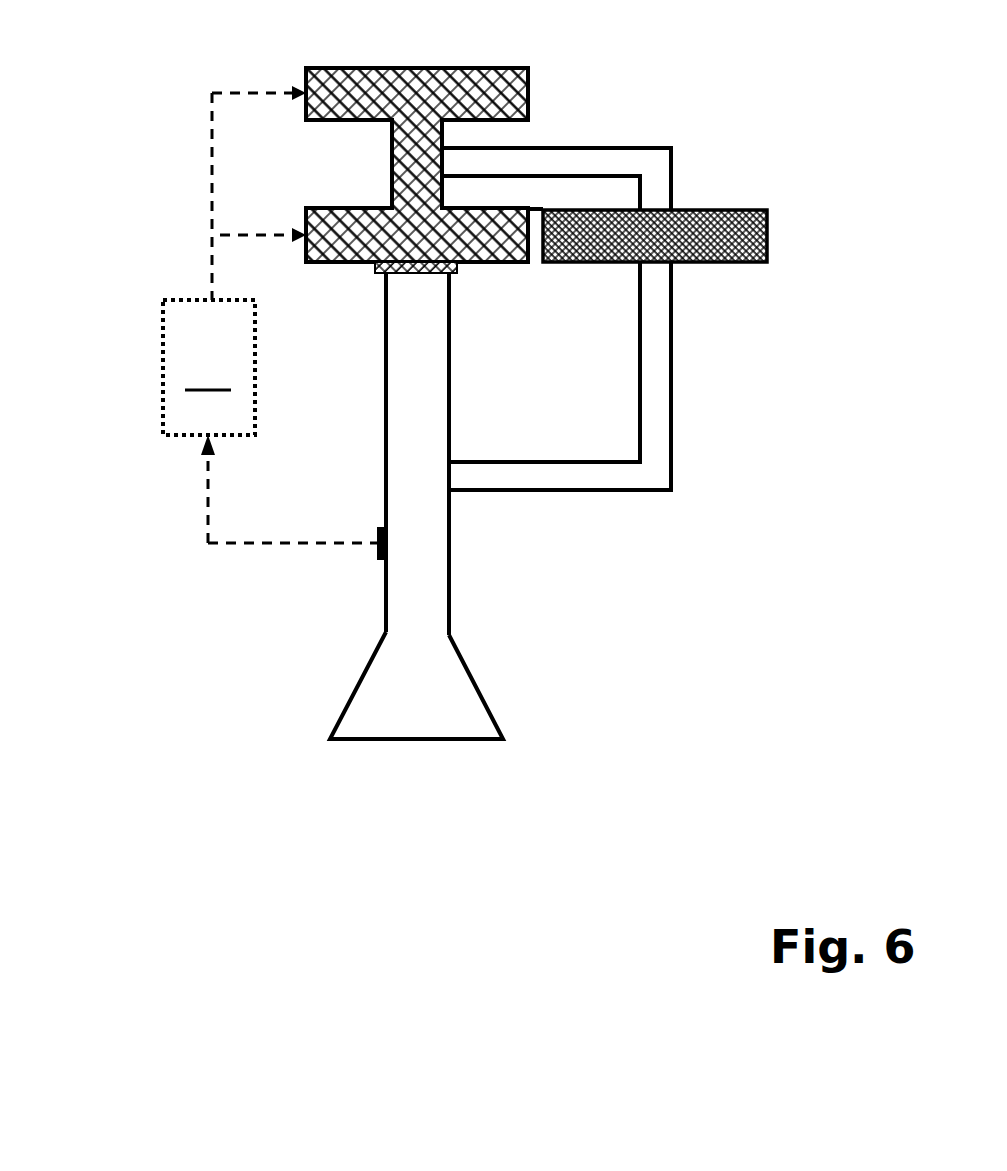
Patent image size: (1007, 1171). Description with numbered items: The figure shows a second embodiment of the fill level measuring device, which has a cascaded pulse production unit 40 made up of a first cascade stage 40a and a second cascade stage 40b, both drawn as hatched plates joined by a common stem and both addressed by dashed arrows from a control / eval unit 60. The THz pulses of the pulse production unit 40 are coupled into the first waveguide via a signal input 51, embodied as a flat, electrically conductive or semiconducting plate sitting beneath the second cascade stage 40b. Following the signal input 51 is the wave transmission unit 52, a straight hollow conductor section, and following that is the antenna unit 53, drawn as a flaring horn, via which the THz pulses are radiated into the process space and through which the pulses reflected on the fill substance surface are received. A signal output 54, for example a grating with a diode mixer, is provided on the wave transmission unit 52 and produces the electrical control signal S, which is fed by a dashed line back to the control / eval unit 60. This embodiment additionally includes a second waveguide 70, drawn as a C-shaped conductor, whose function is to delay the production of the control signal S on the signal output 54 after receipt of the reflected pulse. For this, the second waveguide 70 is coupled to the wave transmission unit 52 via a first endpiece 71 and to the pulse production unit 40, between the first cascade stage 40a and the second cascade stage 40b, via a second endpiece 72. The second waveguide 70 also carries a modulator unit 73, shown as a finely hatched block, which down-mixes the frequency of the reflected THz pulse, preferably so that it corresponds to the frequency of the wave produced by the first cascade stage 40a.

The pulse production unit 40 is at (198, 55).
The first cascade stage 40a is at (530, 83).
The second cascade stage 40b is at (363, 208).
The signal input 51 is at (455, 270).
The wave transmission unit 52 is at (452, 547).
The antenna unit 53 is at (477, 690).
The signal output 54 is at (378, 555).
The control / evaluation unit 60 is at (163, 367).
The second waveguide 70 is at (810, 145).
The first endpiece 71 is at (450, 460).
The second endpiece 72 is at (448, 147).
The modulator unit 73 is at (703, 208).